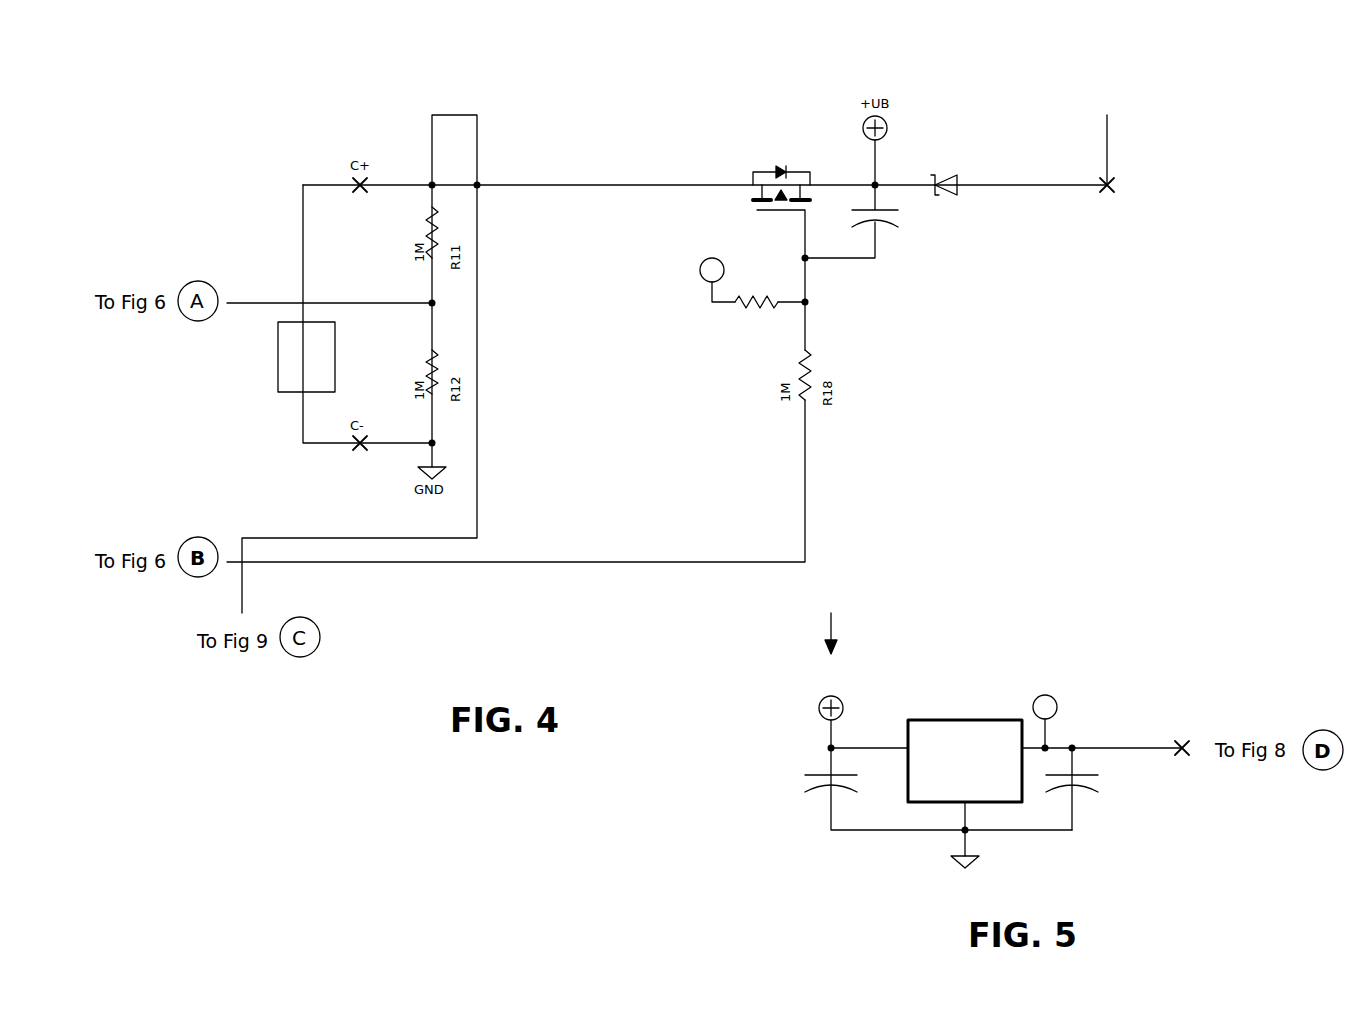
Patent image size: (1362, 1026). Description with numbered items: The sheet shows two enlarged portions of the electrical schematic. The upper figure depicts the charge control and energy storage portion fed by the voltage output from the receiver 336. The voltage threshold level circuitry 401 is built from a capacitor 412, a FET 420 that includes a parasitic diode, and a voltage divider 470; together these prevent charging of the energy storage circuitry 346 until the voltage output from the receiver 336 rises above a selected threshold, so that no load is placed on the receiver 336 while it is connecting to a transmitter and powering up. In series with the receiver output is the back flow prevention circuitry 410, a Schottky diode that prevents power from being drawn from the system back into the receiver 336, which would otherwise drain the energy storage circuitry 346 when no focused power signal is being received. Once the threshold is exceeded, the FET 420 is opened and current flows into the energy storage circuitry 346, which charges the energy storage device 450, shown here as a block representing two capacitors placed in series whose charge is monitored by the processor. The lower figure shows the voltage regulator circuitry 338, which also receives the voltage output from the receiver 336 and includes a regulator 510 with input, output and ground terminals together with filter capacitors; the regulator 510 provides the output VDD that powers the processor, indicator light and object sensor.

In FIG. 4, the receiver 336 is at (1122, 140).
In FIG. 5, the receiver 336 is at (897, 637).
In FIG. 5, the voltage regulator circuitry 338 is at (952, 766).
In FIG. 4, the energy storage circuitry 346 is at (250, 404).
In FIG. 4, the voltage threshold level circuitry 401 is at (850, 292).
In FIG. 4, the back flow prevention circuitry 410 is at (966, 218).
In FIG. 4, the capacitor 412 is at (909, 260).
In FIG. 4, the FET 420 is at (740, 169).
In FIG. 4, the energy storage device 450 is at (277, 381).
In FIG. 4, the voltage divider 470 is at (713, 327).
In FIG. 5, the regulator 510 is at (945, 720).